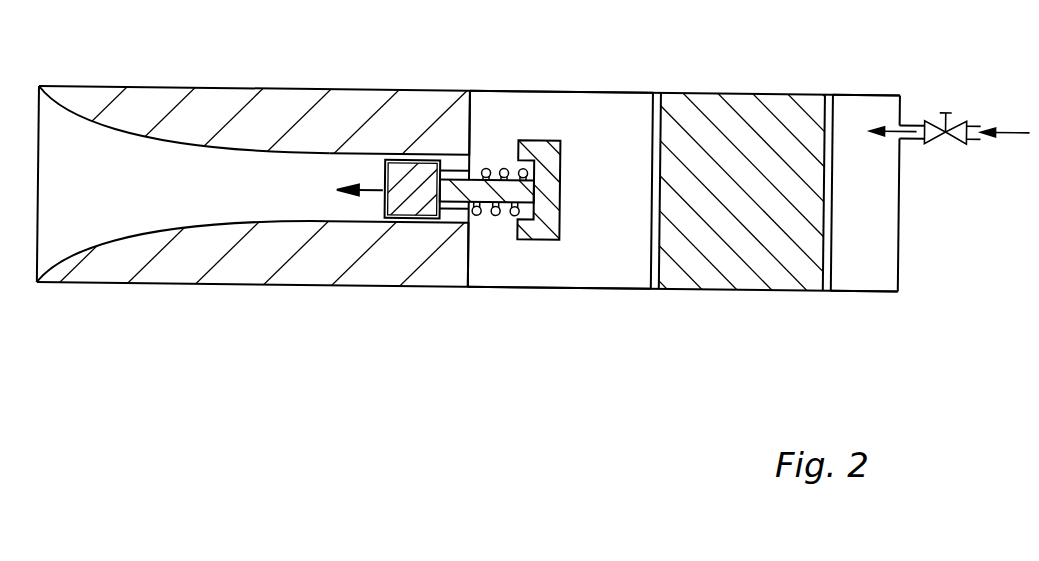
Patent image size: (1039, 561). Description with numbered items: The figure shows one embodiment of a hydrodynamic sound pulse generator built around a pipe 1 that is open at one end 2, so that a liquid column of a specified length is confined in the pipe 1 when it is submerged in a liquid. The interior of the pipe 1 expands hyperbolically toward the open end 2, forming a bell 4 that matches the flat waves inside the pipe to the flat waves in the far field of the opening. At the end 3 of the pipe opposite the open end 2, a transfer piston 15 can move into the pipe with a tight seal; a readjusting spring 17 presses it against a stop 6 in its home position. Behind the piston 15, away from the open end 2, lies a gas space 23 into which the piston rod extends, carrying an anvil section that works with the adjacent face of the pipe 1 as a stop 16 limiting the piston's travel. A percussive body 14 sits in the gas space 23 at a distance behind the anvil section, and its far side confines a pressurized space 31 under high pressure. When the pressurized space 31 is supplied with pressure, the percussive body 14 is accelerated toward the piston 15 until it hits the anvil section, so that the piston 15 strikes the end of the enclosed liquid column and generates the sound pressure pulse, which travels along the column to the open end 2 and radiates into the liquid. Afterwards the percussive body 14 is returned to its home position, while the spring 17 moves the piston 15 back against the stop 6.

The pipe 1 is at (267, 110).
The open end 2 is at (40, 86).
The end of the pipe opposite the open end 3 is at (345, 216).
The bell 4 is at (117, 130).
The stop 6 is at (444, 215).
The percussive body 14 is at (715, 278).
The transfer piston 15 is at (418, 210).
The stop 16 is at (527, 232).
The readjusting spring 17 is at (485, 168).
The gas space 23 is at (580, 275).
The pressurized space 31 is at (883, 274).